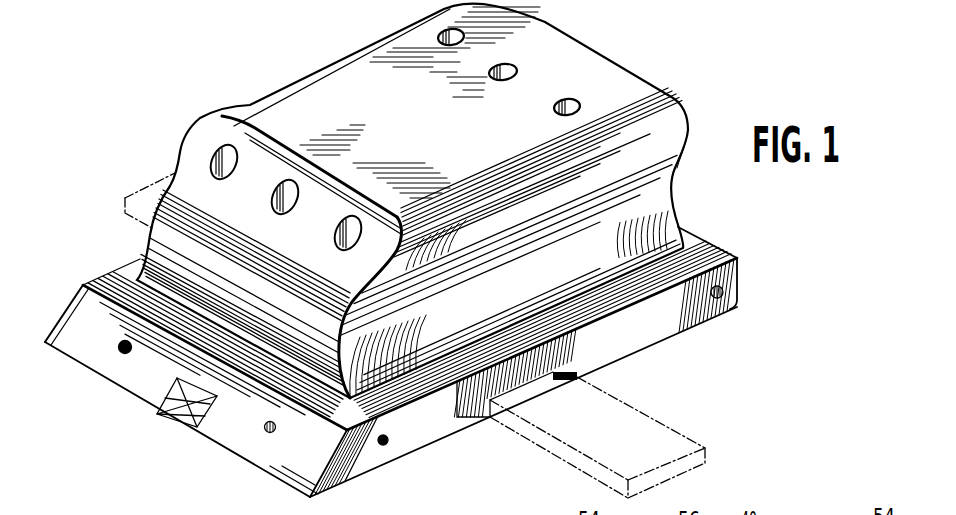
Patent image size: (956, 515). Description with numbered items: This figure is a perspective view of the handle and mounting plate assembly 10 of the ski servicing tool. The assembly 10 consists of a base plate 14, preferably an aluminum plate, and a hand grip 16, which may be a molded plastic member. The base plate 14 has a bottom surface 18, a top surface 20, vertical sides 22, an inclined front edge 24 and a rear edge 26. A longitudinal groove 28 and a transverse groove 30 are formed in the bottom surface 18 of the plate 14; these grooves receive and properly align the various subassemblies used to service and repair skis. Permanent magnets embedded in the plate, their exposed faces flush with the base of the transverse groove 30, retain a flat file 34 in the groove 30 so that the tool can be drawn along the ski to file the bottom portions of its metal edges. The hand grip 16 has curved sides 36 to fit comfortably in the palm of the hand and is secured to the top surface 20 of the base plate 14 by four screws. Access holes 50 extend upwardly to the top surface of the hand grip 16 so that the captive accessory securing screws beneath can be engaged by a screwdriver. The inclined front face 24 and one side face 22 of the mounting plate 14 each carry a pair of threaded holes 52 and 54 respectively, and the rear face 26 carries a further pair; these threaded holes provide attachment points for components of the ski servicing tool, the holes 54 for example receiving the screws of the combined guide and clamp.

The handle and mounting plate assembly 10 is at (93, 95).
The base plate 14 is at (98, 266).
The hand grip 16 is at (308, 57).
The bottom surface 18 is at (443, 418).
The top surface 20 is at (623, 297).
The vertical sides 22 is at (614, 344).
The inclined front edge 24 is at (283, 467).
The rear edge 26 is at (746, 253).
The longitudinal groove 28 is at (207, 412).
The transverse groove 30 is at (533, 381).
The flat file 34 is at (628, 421).
The curved sides 36 is at (676, 163).
The access holes 50 is at (518, 71).
The threaded holes 52 is at (118, 347).
The threaded holes 54 is at (383, 446).